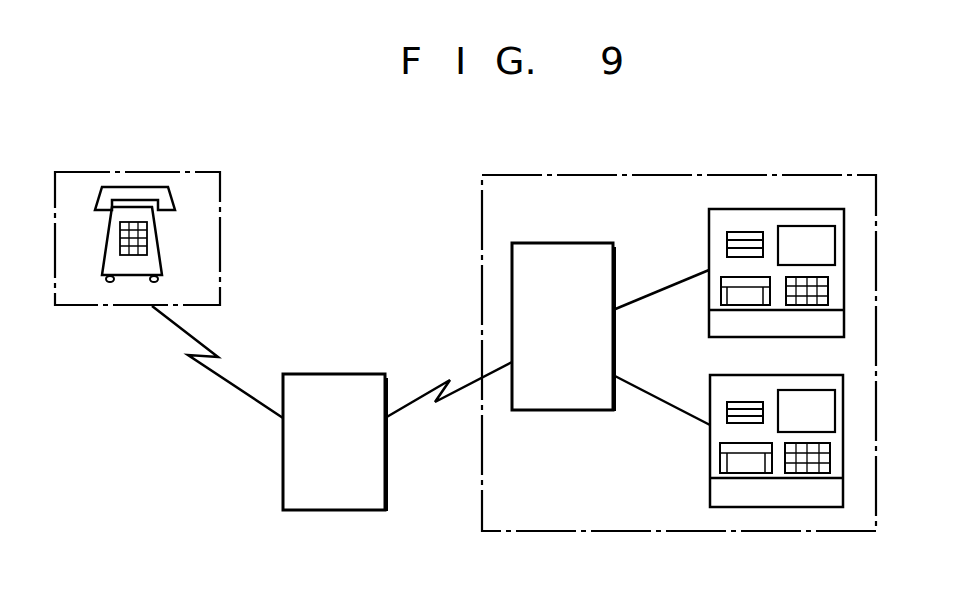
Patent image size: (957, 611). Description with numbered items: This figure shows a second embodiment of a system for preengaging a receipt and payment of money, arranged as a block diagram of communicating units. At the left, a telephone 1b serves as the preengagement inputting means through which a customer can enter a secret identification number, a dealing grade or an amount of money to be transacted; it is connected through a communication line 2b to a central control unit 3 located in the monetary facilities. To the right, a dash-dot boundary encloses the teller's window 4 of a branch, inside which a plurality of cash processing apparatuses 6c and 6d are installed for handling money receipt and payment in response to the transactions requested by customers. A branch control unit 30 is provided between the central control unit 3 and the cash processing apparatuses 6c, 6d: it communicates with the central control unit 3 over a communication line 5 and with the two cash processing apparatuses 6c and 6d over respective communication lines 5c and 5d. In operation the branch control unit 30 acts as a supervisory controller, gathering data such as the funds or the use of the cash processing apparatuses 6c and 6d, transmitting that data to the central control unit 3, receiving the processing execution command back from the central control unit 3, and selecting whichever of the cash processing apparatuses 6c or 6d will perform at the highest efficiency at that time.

The telephone 1b is at (183, 172).
The communication line 2b is at (222, 378).
The central control unit 3 is at (336, 374).
The teller's window 4 is at (803, 175).
The communication line 5 is at (422, 398).
The branch control unit 30 is at (548, 243).
The communication line 5c is at (668, 290).
The cash processing apparatus 6c is at (766, 208).
The communication line 5d is at (656, 400).
The cash processing apparatus 6d is at (710, 492).